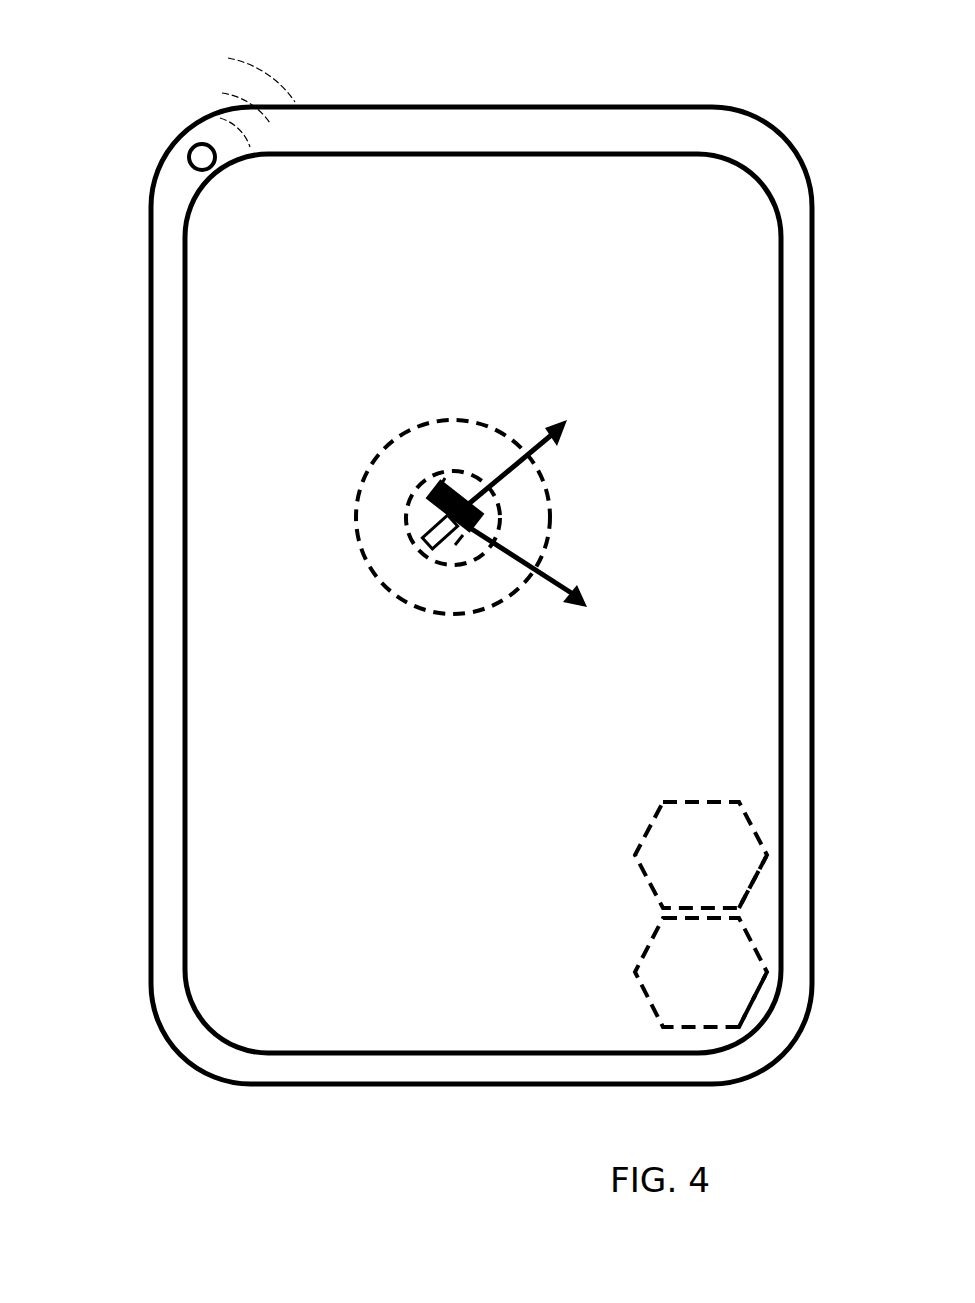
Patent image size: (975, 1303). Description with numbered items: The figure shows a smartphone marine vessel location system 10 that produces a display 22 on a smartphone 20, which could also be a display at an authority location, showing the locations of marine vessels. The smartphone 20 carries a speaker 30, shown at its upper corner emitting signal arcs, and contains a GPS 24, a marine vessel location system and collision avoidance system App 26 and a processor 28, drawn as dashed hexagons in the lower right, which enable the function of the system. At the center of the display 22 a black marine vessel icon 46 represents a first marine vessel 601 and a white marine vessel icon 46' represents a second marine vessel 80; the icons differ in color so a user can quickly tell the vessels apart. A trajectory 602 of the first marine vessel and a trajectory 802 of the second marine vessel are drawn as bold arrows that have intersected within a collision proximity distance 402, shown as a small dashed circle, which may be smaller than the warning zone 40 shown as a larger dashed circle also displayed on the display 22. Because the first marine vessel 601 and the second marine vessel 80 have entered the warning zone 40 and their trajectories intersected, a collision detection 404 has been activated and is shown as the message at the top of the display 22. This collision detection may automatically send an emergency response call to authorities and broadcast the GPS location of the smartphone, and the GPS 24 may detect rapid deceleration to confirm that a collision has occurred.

The smartphone marine vessel location system 10 is at (108, 91).
The smartphone 20 is at (660, 120).
The display 22 is at (755, 290).
The GPS 24 is at (737, 857).
The marine vessel location system and collision avoidance system App 26 is at (737, 890).
The processor 28 is at (735, 967).
The speaker 30 is at (203, 157).
The warning zone 40 is at (540, 470).
The marine vessel icon 46 is at (412, 471).
The marine vessel icon 46' is at (476, 597).
The second marine vessel 80 is at (460, 540).
The collision proximity distance 402 is at (500, 506).
The collision detection 404 is at (625, 232).
The first marine vessel 601 is at (435, 485).
The trajectory 602 is at (587, 610).
The trajectory 802 is at (561, 425).